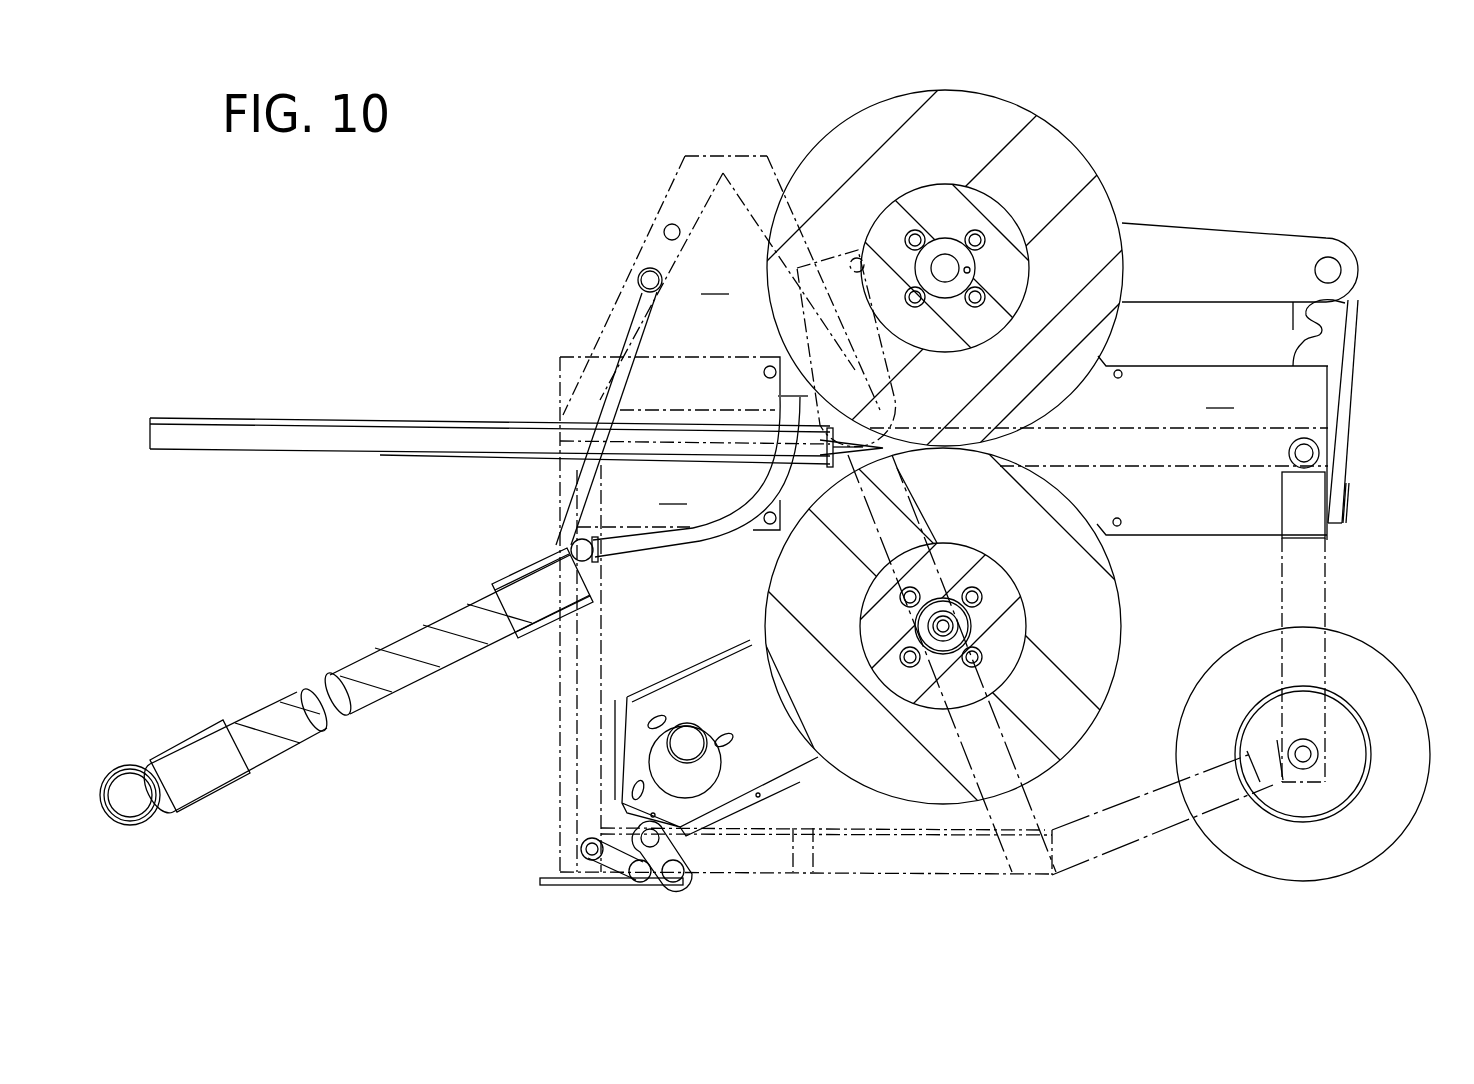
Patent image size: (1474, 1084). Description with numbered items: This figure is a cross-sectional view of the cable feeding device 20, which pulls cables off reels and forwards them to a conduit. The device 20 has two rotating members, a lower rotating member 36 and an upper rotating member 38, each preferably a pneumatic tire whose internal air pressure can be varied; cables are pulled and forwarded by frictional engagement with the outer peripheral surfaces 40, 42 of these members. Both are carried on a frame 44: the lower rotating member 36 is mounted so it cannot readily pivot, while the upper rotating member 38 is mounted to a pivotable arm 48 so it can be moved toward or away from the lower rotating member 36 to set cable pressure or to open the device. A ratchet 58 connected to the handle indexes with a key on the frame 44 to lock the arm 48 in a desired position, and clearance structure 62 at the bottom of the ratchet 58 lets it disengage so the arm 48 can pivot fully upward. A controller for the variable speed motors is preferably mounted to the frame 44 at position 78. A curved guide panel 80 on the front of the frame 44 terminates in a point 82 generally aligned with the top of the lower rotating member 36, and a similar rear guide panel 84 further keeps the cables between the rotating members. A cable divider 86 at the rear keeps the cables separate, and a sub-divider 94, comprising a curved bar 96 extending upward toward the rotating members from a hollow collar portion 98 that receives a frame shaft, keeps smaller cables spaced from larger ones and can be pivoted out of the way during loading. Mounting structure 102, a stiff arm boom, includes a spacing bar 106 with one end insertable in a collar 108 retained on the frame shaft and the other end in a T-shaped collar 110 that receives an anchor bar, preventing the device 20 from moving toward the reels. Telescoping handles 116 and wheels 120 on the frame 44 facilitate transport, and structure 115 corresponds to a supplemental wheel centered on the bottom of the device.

The cable feeding device 20 is at (674, 891).
The lower rotating member 36 is at (1120, 584).
The upper rotating member 38 is at (1112, 200).
The outer peripheral surface 40 is at (1105, 698).
The outer peripheral surface 42 is at (1006, 102).
The frame 44 is at (1322, 610).
The arm 48 is at (1240, 247).
The ratchet 58 is at (1352, 360).
The clearance structure 62 is at (1348, 503).
The position 78 is at (721, 285).
The guide panel 80 is at (1212, 448).
The point 82 is at (982, 470).
The guide panel 84 is at (695, 443).
The cable divider 86 is at (624, 328).
The sub-divider 94 is at (624, 555).
The bar 96 is at (740, 546).
The collar portion 98 is at (573, 551).
The mounting structure 102 is at (346, 688).
The spacing bar 106 is at (460, 662).
The collar 108 is at (534, 628).
The T-shaped collar 110 is at (216, 777).
The corresponding structure 115 is at (603, 884).
The handle 116 is at (463, 442).
The wheel 120 is at (1370, 666).